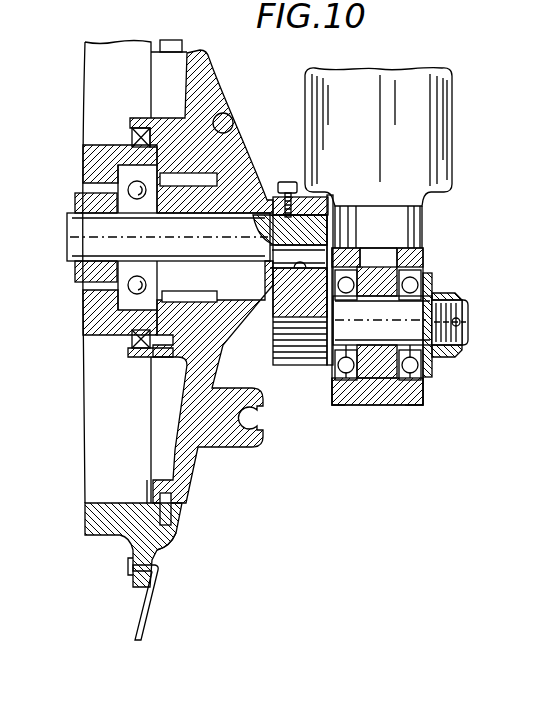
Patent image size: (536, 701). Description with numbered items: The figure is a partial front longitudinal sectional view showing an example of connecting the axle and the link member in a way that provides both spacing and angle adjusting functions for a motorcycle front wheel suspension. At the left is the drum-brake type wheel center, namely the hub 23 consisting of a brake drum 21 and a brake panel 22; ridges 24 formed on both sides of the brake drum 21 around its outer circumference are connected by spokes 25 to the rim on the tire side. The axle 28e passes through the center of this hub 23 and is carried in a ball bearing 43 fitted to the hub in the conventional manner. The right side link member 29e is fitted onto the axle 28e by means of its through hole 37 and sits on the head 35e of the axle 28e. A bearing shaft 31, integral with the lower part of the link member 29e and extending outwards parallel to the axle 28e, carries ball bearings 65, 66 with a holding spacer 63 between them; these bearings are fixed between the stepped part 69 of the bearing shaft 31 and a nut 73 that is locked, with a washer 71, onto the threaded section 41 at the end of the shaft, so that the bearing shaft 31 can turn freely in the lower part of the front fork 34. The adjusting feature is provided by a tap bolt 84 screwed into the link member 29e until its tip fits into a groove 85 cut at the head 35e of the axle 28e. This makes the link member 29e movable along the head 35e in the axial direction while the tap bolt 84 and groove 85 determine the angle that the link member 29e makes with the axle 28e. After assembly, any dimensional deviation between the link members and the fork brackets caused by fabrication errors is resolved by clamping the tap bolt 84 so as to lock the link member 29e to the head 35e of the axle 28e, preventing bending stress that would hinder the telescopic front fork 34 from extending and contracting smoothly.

The brake drum 21 is at (92, 520).
The brake panel 22 is at (203, 91).
The hub 23 is at (131, 418).
The ridges 24 is at (155, 547).
The spokes 25 is at (150, 597).
The axle 28e is at (78, 232).
The right side link member 29e is at (298, 353).
The bearing shaft 31 is at (372, 405).
The front fork 34 is at (442, 130).
The head of the axle 35e is at (362, 240).
The through hole 37 is at (296, 262).
The threaded section 41 is at (468, 322).
The ball bearing 43 is at (83, 182).
The holding spacer 63 is at (378, 300).
The ball bearing 65 is at (402, 407).
The ball bearing 66 is at (338, 405).
The stepped part 69 is at (278, 300).
The washer 71 is at (433, 283).
The nut 73 is at (460, 353).
The tap bolt 84 is at (288, 182).
The groove 85 is at (313, 217).